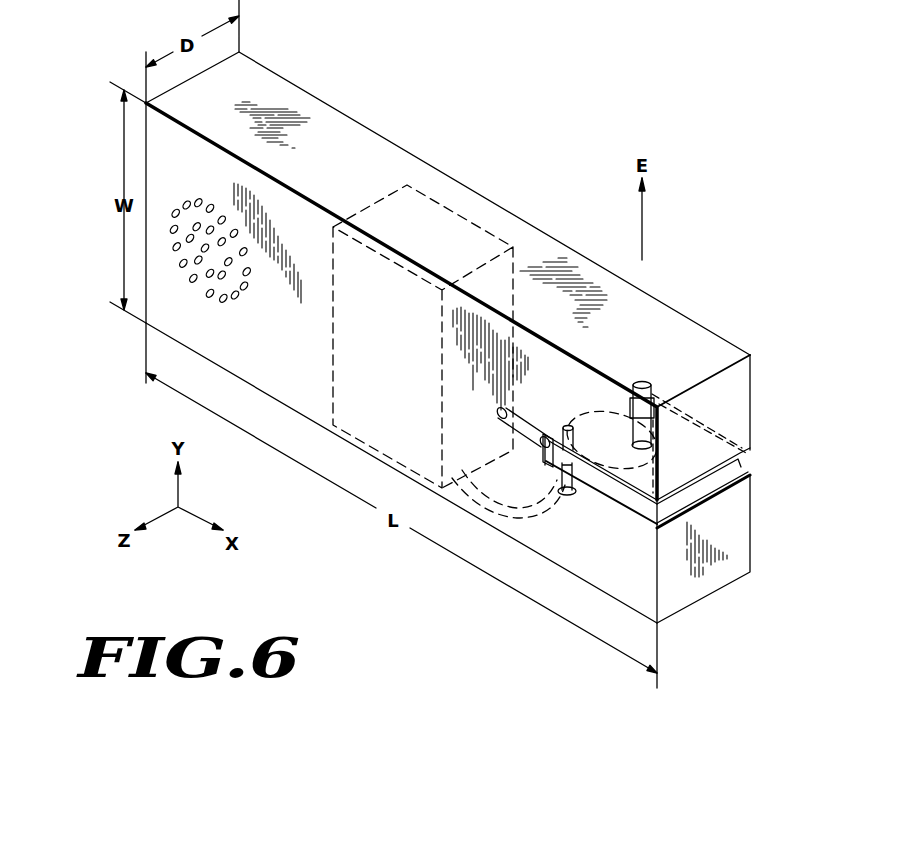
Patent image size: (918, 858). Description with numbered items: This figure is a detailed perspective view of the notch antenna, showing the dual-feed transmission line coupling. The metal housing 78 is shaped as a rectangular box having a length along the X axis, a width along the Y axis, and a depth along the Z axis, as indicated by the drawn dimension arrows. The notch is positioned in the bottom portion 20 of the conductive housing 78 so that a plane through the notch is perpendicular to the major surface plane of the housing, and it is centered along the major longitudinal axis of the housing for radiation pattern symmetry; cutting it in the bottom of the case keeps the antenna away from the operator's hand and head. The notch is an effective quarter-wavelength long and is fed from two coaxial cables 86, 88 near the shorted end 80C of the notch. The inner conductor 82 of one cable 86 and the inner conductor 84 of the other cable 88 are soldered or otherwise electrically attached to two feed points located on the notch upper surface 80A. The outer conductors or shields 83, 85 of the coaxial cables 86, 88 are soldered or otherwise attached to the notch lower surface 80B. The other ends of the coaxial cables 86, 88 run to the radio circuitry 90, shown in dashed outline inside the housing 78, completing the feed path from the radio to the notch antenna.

The bottom portion 20 is at (737, 546).
The metal housing 78 is at (372, 151).
The notch upper surface 80A is at (738, 461).
The notch lower surface 80B is at (722, 483).
The shorted end 80C is at (543, 450).
The inner conductor 82 is at (578, 424).
The outer conductor 83 is at (583, 480).
The inner conductor 84 is at (650, 388).
The outer conductor 85 is at (628, 414).
The coaxial cable 86 is at (508, 514).
The coaxial cable 88 is at (528, 422).
The radio circuitry 90 is at (387, 446).